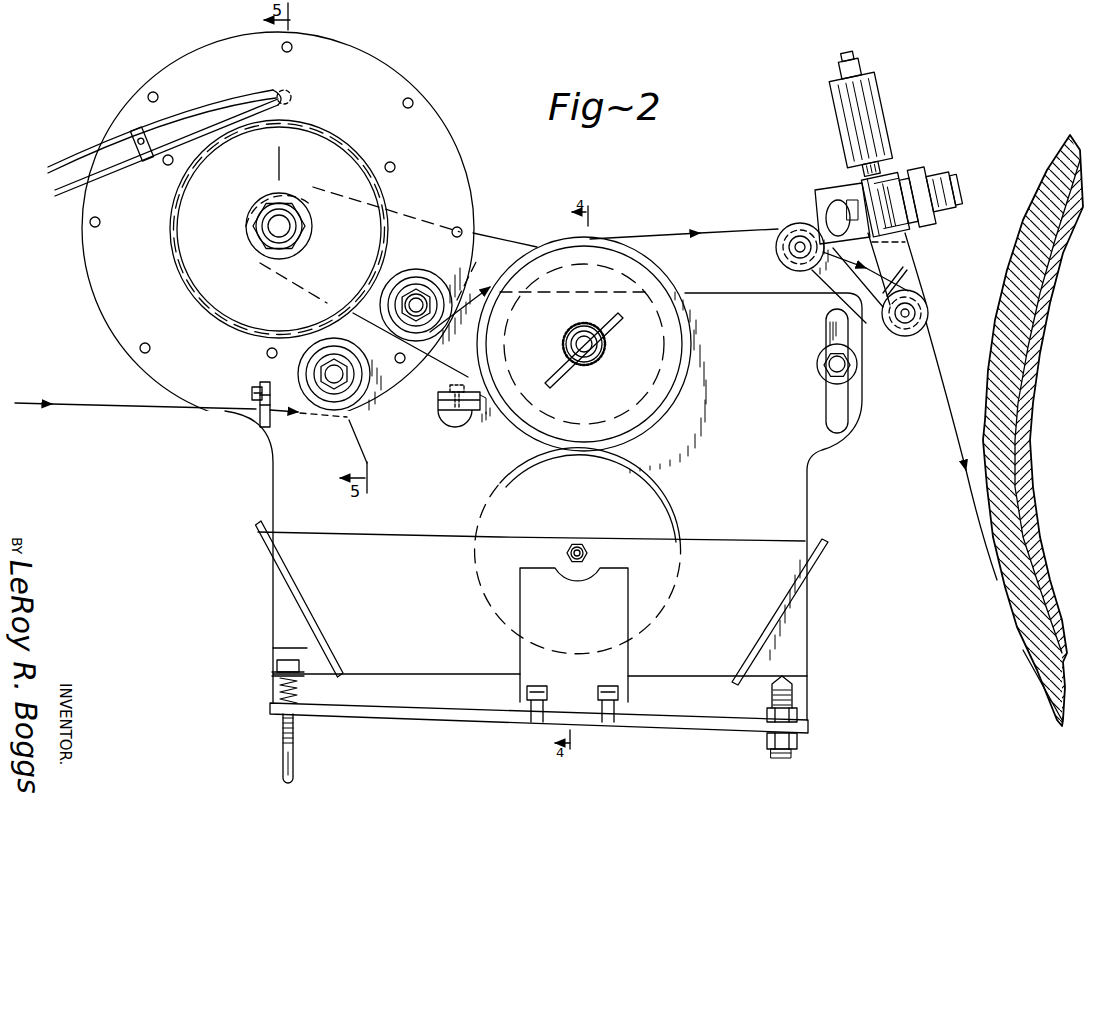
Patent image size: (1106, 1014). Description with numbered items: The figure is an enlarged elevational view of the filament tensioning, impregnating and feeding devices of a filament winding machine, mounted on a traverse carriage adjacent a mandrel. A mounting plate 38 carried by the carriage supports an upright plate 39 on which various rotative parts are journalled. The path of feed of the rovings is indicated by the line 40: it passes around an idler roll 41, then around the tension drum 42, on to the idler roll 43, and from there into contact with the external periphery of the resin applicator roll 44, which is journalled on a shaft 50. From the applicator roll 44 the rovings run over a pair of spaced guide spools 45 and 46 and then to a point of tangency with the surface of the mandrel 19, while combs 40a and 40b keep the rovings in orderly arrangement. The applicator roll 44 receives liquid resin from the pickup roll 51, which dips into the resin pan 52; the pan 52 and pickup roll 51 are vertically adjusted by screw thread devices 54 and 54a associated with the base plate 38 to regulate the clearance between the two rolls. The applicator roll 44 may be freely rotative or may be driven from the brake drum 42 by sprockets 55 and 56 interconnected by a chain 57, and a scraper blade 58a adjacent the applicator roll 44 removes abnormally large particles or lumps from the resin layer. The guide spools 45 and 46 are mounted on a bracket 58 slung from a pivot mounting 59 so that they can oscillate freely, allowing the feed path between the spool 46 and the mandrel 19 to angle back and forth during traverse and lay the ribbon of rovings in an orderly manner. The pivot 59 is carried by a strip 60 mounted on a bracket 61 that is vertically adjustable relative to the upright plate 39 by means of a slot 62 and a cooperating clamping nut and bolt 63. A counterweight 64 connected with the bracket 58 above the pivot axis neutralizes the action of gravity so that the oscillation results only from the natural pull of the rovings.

The mandrel 19 is at (1002, 613).
The mounting plate 38 is at (722, 729).
The upright plate 39 is at (807, 520).
The feed path of the filaments 40 is at (75, 405).
The comb 40a is at (260, 418).
The comb 40b is at (978, 272).
The idler roll 41 is at (305, 368).
The tension drum 42 is at (195, 233).
The idler roll 43 is at (418, 272).
The resin applicator roll 44 is at (647, 283).
The guide spool 45 is at (800, 222).
The guide spool 46 is at (912, 337).
The shaft 50 is at (592, 357).
The pickup roll 51 is at (645, 500).
The resin pan 52 is at (307, 543).
The screw thread device 54 is at (298, 742).
The screw thread device 54a is at (798, 735).
The sprocket 55 is at (325, 230).
The sprocket 56 is at (527, 372).
The chain 57 is at (495, 242).
The bracket 58 is at (907, 253).
The scraper blade 58a is at (460, 428).
The pivot mounting 59 is at (970, 160).
The strip 60 is at (907, 176).
The bracket 61 is at (812, 272).
The slot 62 is at (836, 437).
The clamping nut and bolt 63 is at (820, 374).
The counterweight 64 is at (838, 118).